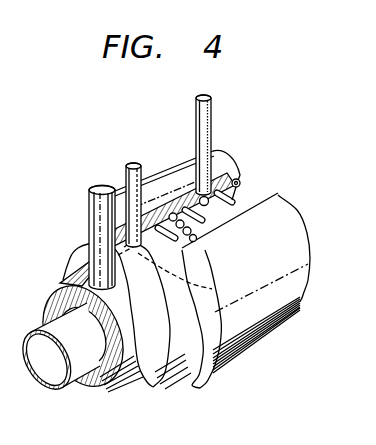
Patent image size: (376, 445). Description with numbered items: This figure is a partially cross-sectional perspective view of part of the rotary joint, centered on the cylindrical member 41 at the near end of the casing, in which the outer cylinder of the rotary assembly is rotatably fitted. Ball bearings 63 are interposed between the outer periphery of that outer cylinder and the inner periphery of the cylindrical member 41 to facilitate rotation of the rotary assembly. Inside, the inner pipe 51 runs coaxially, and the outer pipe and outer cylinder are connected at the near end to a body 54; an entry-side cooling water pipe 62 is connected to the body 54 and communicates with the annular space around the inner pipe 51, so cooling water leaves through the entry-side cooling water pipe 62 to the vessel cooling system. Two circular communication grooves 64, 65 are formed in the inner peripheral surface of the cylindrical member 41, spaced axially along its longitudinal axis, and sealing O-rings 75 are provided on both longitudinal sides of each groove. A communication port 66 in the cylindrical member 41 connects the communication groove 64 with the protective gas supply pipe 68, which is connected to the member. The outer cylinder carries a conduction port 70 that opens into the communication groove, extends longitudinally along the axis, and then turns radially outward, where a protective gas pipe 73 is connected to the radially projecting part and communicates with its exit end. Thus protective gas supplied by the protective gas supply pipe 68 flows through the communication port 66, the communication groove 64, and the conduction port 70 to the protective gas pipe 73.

The cylindrical member 41 is at (283, 210).
The inner pipe 51 is at (68, 372).
The body 54 is at (137, 350).
The entry-side cooling water pipe 62 is at (92, 214).
The ball bearings 63 is at (200, 240).
The communication groove 64 is at (204, 216).
The communication groove 65 is at (238, 180).
The communication port 66 is at (214, 166).
The protective gas supply pipe 68 is at (211, 112).
The conduction port 70 is at (207, 290).
The protective gas pipe 73 is at (126, 180).
The sealing O-rings 75 is at (236, 185).